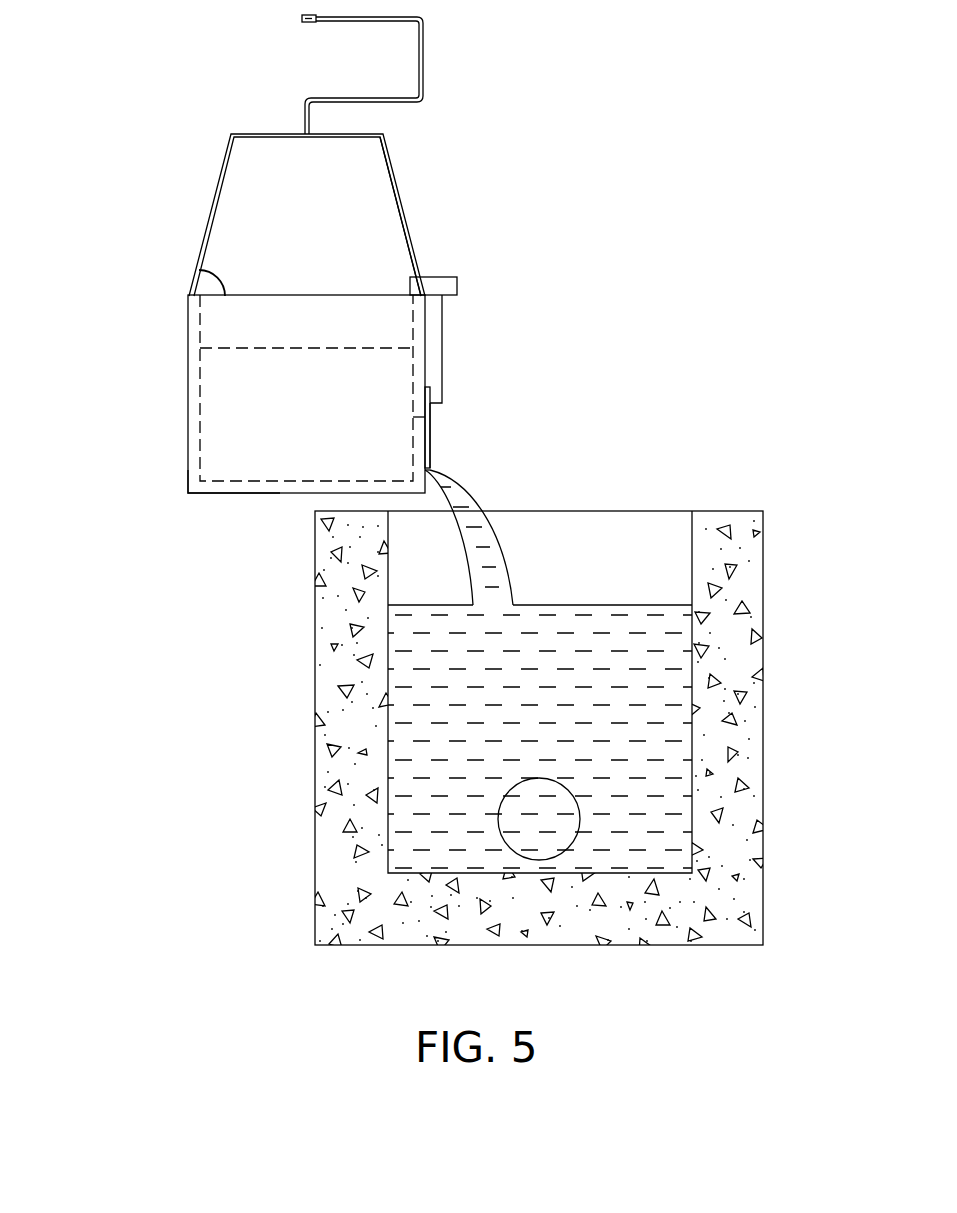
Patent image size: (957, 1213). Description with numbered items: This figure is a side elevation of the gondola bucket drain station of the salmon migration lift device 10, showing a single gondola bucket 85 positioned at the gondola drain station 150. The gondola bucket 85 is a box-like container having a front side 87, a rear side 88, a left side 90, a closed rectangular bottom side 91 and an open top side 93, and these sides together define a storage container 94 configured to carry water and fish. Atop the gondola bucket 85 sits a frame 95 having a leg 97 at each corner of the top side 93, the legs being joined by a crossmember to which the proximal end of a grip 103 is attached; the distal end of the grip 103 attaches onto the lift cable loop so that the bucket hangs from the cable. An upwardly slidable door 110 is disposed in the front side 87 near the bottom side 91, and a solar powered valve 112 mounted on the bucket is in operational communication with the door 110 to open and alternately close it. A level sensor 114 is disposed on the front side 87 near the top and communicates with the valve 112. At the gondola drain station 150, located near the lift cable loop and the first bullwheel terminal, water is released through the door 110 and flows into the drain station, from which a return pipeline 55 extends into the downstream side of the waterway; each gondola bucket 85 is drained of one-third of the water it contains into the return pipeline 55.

The salmon migration lift device 10 is at (614, 167).
The return pipeline 55 is at (573, 843).
The gondola bucket 85 is at (190, 494).
The front side 87 is at (425, 338).
The rear side 88 is at (188, 382).
The left side 90 is at (223, 488).
The closed rectangular bottom side 91 is at (242, 493).
The open top side 93 is at (199, 270).
The storage container 94 is at (260, 483).
The frame 95 is at (416, 175).
The leg 97 is at (409, 230).
The grip 103 is at (427, 68).
The upwardly slidable door 110 is at (432, 428).
The solar powered valve 112 is at (430, 388).
The level sensor 114 is at (457, 277).
The gondola drain station 150 is at (763, 511).